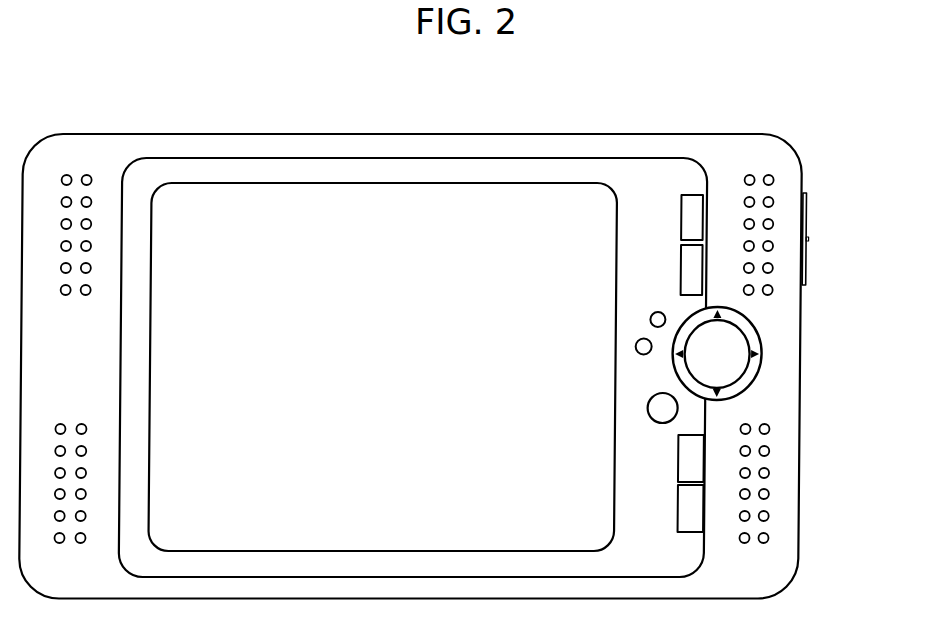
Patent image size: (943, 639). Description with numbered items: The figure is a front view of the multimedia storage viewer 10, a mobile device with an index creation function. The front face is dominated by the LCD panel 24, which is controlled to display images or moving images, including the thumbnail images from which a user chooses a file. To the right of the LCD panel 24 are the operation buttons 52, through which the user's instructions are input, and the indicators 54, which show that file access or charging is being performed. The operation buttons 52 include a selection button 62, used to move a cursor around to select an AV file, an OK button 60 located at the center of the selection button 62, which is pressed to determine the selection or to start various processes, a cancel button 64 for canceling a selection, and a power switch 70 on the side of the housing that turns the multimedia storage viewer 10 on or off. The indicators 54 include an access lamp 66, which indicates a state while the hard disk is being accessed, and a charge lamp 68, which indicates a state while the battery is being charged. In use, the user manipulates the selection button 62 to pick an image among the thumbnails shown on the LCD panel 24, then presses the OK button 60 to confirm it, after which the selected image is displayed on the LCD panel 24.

The multimedia storage viewer 10 is at (608, 123).
The LCD panel 24 is at (205, 198).
The operation buttons 52 is at (773, 366).
The indicators 54 is at (569, 327).
The OK button 60 is at (737, 370).
The selection button 62 is at (756, 343).
The cancel button 64 is at (679, 409).
The access lamp 66 is at (636, 351).
The charge lamp 68 is at (650, 321).
The power switch 70 is at (807, 242).